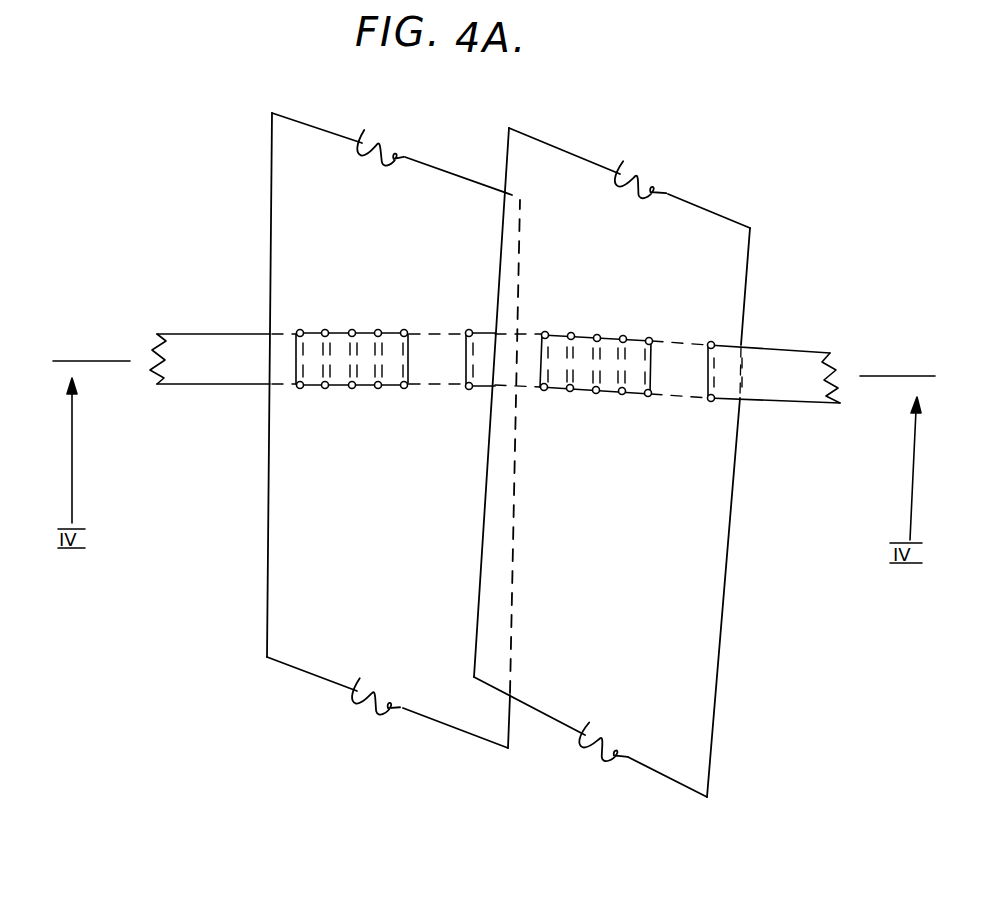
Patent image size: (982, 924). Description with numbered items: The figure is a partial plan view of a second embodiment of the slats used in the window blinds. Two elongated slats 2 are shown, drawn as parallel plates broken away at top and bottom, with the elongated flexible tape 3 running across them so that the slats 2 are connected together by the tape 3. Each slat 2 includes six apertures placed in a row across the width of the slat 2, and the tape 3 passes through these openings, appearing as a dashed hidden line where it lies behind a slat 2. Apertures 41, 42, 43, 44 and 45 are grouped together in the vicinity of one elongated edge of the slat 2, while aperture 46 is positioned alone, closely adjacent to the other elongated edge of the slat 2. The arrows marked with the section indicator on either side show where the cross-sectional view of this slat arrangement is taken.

The slat 2 is at (703, 634).
The flexible tape 3 is at (806, 366).
The aperture 41 is at (546, 332).
The aperture 42 is at (574, 333).
The aperture 43 is at (599, 335).
The aperture 44 is at (625, 336).
The aperture 45 is at (651, 338).
The aperture 46 is at (709, 343).